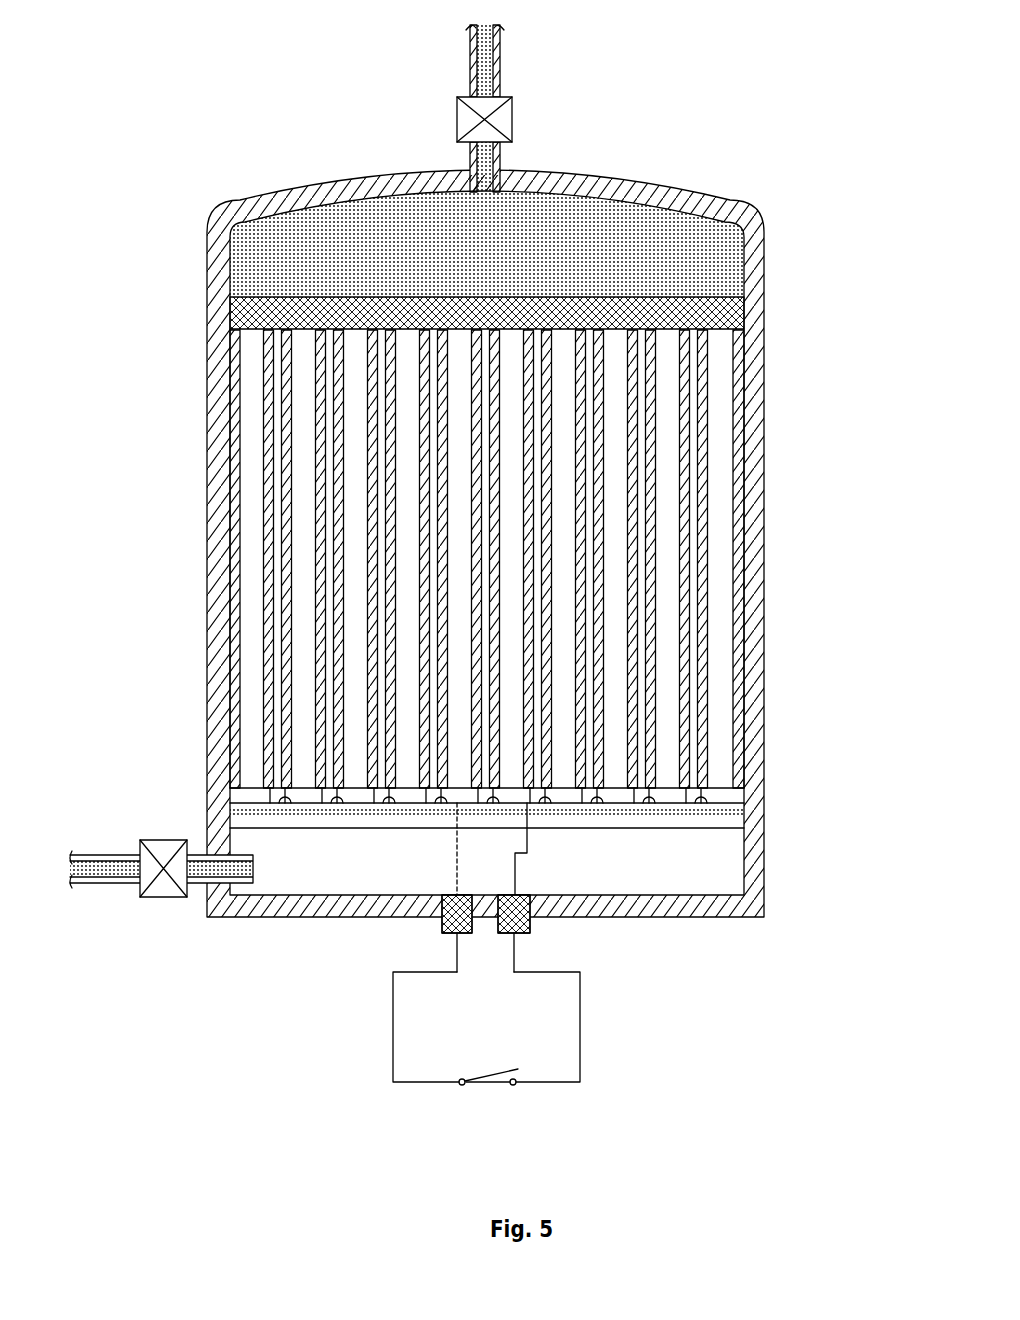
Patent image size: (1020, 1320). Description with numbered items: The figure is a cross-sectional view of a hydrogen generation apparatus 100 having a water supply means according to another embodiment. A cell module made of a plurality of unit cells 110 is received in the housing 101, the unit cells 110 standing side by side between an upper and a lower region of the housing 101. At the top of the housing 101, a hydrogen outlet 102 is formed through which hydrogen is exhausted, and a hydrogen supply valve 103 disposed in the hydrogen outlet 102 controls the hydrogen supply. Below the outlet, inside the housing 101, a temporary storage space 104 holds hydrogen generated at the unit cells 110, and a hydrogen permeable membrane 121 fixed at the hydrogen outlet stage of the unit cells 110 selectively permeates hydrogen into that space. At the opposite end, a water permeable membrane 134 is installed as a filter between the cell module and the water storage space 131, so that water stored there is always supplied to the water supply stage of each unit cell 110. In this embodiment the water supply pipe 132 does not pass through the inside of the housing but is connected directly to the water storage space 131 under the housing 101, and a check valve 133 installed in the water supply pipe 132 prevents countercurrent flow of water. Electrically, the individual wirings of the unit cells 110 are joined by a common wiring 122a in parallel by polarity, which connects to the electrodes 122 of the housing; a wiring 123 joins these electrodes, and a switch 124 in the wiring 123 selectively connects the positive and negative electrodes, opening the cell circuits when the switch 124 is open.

The hydrogen generating apparatus 100 is at (474, 517).
The housing 101 is at (767, 483).
The hydrogen outlet 102 is at (500, 53).
The hydrogen supply valve 103 is at (513, 118).
The temporary storage space 104 is at (637, 227).
The unit cells 110 is at (715, 790).
The hydrogen permeable membrane 121 is at (763, 328).
The electrode of the housing 122 is at (440, 923).
The common wiring 122a is at (363, 810).
The wiring 123 is at (393, 1037).
The switch 124 is at (487, 1080).
The water storage space 131 is at (280, 880).
The water supply pipe 132 is at (97, 885).
The check valve 133 is at (160, 897).
The water permeable membrane 134 is at (255, 800).